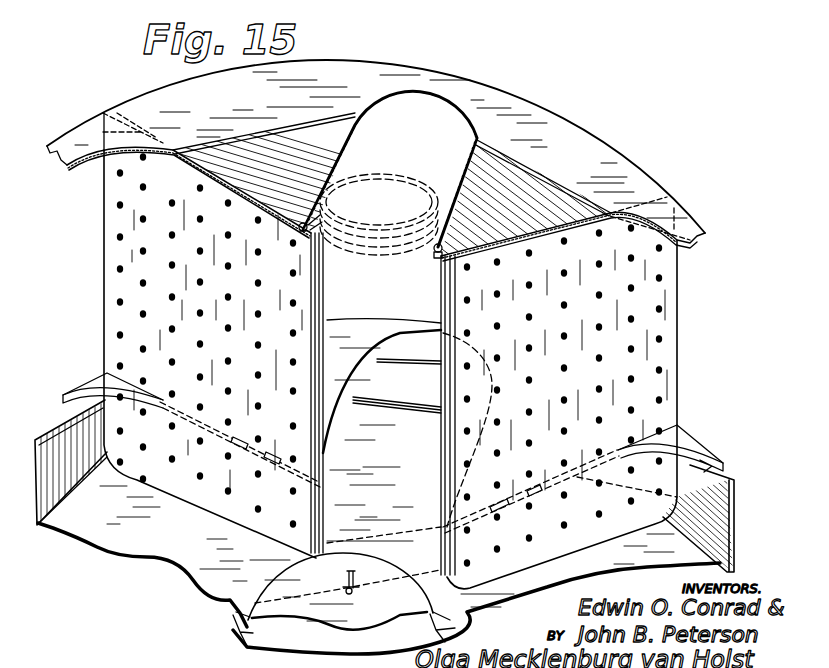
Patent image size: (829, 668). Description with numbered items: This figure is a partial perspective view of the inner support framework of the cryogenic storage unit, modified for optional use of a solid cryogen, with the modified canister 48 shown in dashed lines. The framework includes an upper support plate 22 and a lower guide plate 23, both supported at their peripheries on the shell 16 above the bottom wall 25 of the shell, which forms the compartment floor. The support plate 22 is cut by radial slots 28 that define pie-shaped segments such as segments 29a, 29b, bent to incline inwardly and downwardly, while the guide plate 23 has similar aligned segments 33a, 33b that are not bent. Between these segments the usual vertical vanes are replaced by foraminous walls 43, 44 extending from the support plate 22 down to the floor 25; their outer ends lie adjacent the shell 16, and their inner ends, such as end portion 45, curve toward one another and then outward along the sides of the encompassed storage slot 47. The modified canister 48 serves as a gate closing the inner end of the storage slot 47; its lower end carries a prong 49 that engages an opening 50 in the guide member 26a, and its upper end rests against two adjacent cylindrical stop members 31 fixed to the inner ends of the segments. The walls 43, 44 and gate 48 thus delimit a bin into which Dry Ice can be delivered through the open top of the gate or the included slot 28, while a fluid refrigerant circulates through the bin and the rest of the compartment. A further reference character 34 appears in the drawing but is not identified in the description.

The upper support plate 22 is at (670, 193).
The slots 28 is at (399, 117).
The modified canister 48 is at (381, 172).
The storage slot 47 is at (400, 301).
The segment 29a is at (283, 165).
The segment 29b is at (541, 200).
The cylindrical stop member 31 is at (302, 225).
The inner end portion 45 is at (320, 217).
The foraminous wall 43 is at (123, 278).
The foraminous wall 44 is at (661, 329).
The lower guide plate 23 is at (97, 382).
The segment 33a is at (420, 445).
The segment 33b is at (667, 495).
The shell 16 is at (737, 503).
The bottom wall 25 is at (153, 543).
The guide member 26a is at (240, 618).
The prong 49 is at (345, 582).
The opening 50 is at (353, 592).
The notch 34 is at (453, 619).